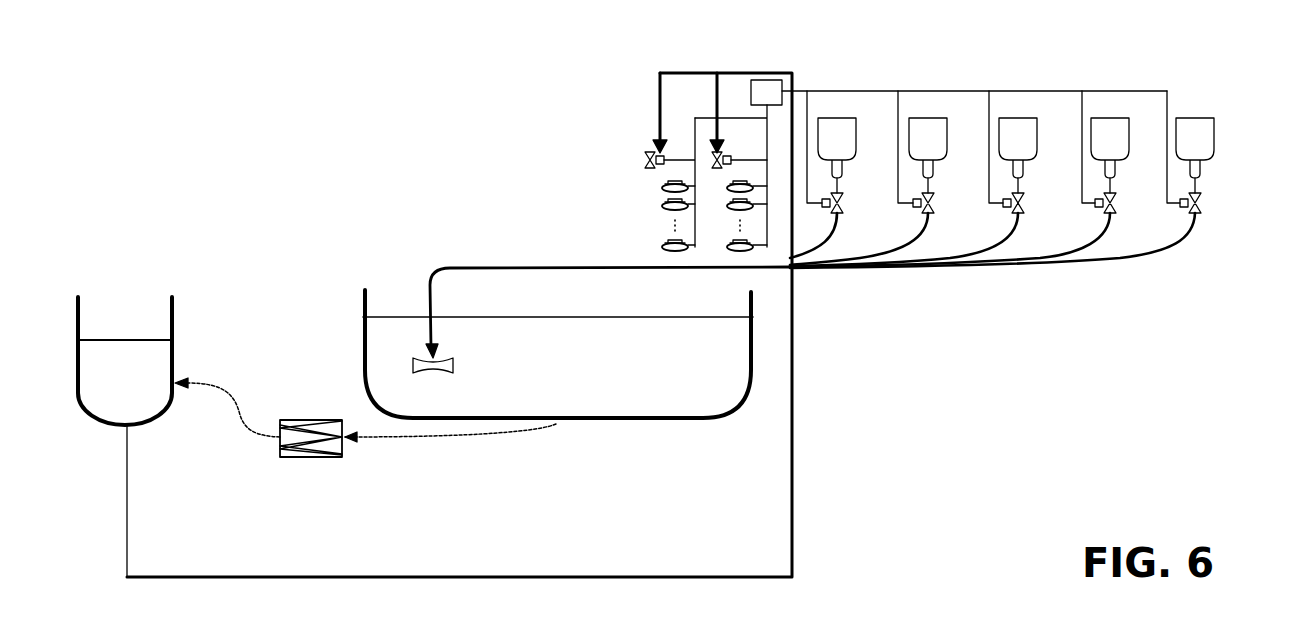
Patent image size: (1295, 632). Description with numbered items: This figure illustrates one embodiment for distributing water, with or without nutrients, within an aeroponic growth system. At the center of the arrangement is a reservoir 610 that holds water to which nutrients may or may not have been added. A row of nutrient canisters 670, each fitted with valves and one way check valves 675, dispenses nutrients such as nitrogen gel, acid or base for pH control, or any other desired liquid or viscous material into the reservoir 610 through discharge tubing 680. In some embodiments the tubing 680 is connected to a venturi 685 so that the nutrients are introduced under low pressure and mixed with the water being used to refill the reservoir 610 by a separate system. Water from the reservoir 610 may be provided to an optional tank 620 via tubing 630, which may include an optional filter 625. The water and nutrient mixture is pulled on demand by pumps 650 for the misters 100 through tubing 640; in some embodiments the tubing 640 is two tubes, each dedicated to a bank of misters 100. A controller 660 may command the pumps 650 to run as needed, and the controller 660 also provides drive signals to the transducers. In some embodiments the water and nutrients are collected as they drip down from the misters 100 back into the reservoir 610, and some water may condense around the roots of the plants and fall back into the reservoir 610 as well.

The misters 100 is at (646, 247).
The reservoir 610 is at (642, 422).
The tank 620 is at (177, 328).
The filter 625 is at (300, 457).
The tubing 630 is at (237, 433).
The tubing 640 is at (792, 503).
The pumps 650 is at (705, 143).
The controller 660 is at (792, 73).
The nutrient canisters 670 is at (856, 118).
The one way check valves 675 is at (843, 207).
The discharge tubing 680 is at (482, 268).
The venturi 685 is at (455, 368).